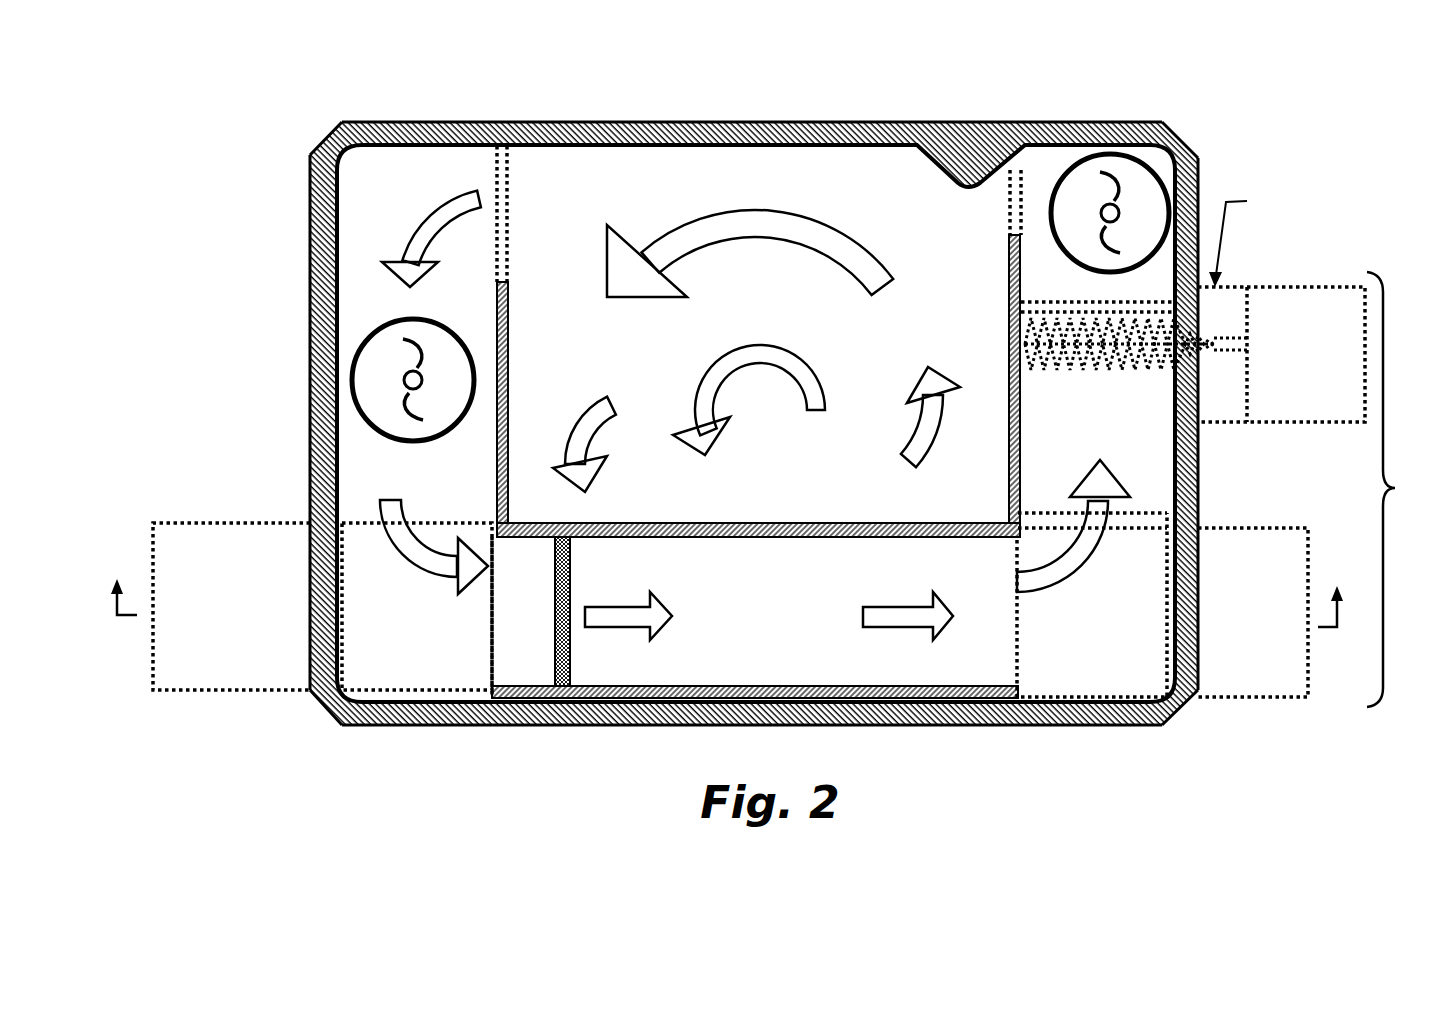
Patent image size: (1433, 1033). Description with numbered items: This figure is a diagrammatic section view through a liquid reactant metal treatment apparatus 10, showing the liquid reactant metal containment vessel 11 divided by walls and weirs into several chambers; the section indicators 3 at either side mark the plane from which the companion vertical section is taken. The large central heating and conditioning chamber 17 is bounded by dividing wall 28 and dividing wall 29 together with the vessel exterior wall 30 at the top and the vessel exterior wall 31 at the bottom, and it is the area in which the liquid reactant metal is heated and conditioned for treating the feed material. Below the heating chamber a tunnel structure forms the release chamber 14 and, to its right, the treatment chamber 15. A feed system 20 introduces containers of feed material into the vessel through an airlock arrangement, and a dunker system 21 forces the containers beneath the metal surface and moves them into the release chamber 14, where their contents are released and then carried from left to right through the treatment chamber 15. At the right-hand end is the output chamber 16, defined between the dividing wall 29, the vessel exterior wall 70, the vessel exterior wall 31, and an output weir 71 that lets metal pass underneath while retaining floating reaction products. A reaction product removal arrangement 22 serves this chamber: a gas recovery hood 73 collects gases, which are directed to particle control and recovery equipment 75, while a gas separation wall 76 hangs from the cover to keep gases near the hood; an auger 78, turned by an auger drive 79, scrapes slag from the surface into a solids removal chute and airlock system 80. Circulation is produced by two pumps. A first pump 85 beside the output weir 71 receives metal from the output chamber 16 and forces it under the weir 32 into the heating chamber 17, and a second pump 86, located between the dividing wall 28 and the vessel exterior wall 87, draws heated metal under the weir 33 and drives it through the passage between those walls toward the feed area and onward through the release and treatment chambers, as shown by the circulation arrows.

The liquid reactant metal treatment apparatus 10 is at (198, 112).
The liquid reactant metal containment vessel 11 is at (711, 100).
The vessel exterior wall 30 is at (543, 121).
The vessel exterior wall 31 is at (552, 726).
The vessel exterior wall 87 is at (310, 244).
The vessel exterior wall 70 is at (1200, 174).
The weir 33 is at (510, 232).
The dividing wall 28 is at (510, 370).
The weir 32 is at (1008, 200).
The dividing wall 29 is at (1008, 378).
The heating and conditioning chamber 17 is at (745, 490).
The second pump 86 is at (350, 375).
The first pump 85 is at (1110, 152).
The output weir 71 is at (1064, 300).
The auger 78 is at (1104, 372).
The solids removal chute and airlock system 80 is at (1208, 408).
The auger drive 79 is at (1293, 408).
The reaction product removal arrangement 22 is at (1318, 433).
The output chamber 16 is at (1080, 660).
The gas separation wall 76 is at (1125, 513).
The gas recovery hood 73 is at (1140, 528).
The particle control and recovery equipment 75 is at (1285, 528).
The release chamber 14 is at (511, 660).
The treatment chamber 15 is at (745, 660).
The dunker system 21 is at (196, 523).
The feed system 20 is at (372, 523).
The section line for FIG. 3 is at (727, 589).